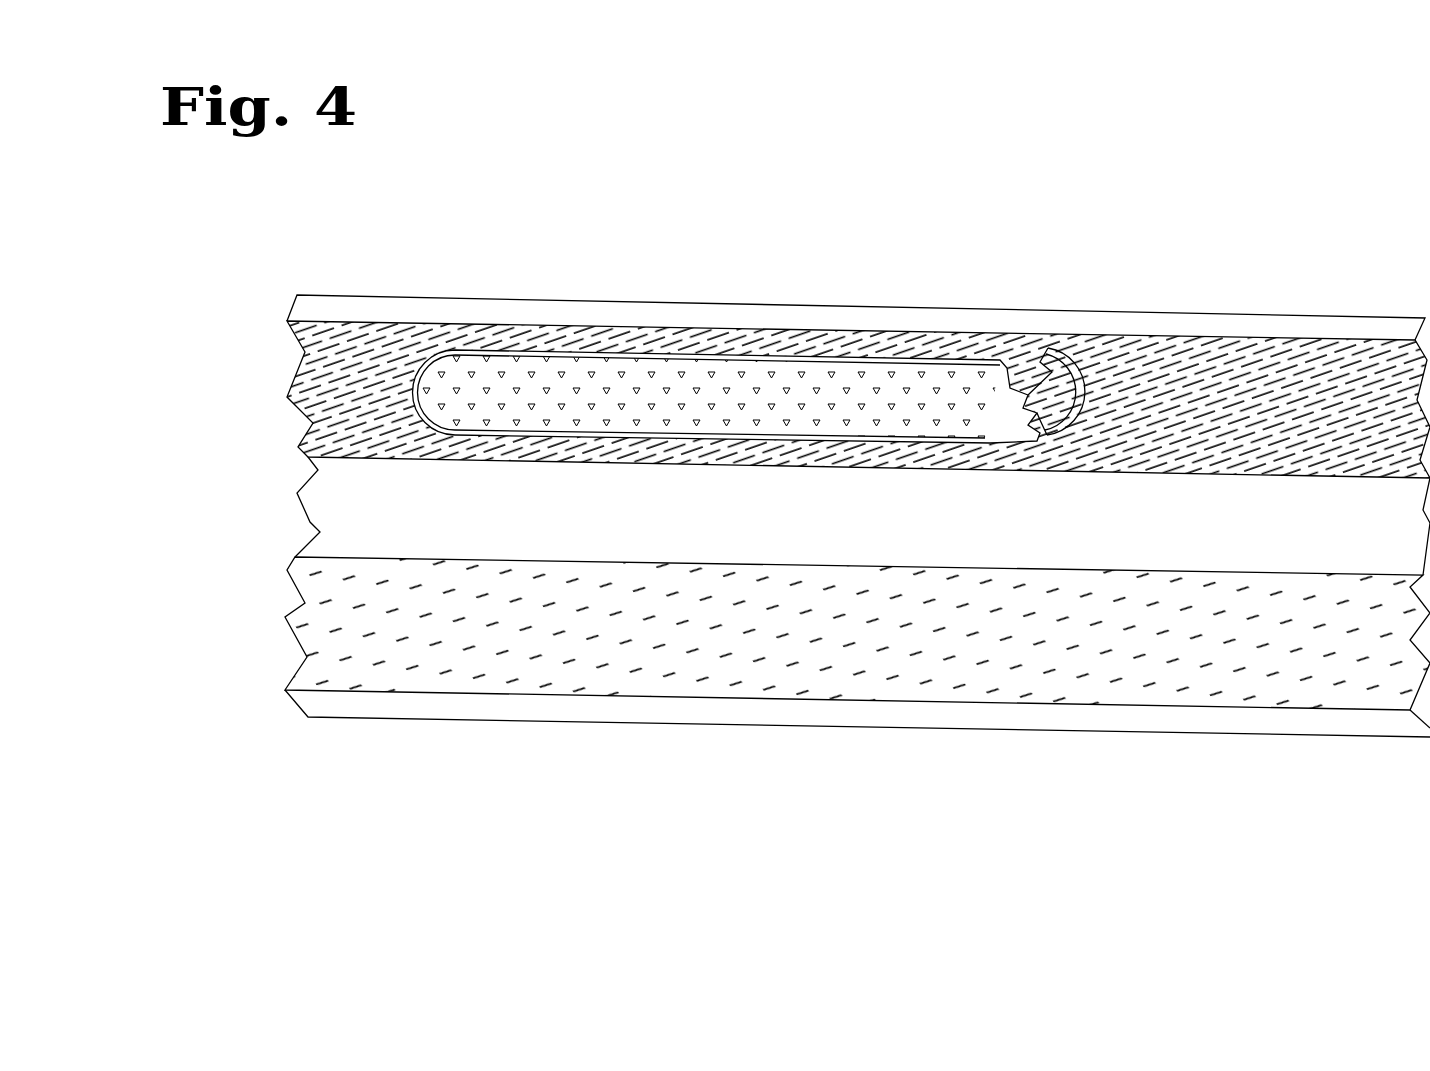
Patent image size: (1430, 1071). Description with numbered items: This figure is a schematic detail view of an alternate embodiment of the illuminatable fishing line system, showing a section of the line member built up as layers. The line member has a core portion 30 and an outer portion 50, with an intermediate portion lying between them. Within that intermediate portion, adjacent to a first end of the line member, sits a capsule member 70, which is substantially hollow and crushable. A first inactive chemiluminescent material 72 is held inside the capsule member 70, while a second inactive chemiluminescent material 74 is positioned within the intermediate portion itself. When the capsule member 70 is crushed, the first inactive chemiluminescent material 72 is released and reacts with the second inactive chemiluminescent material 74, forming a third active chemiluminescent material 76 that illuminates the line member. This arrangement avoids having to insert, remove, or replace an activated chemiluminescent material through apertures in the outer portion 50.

The core portion 30 is at (370, 493).
The outer portion 50 is at (551, 703).
The capsule member 70 is at (547, 348).
The first inactive chemiluminescent material 72 is at (820, 392).
The second inactive chemiluminescent material 74 is at (912, 632).
The third active chemiluminescent material 76 is at (1232, 410).